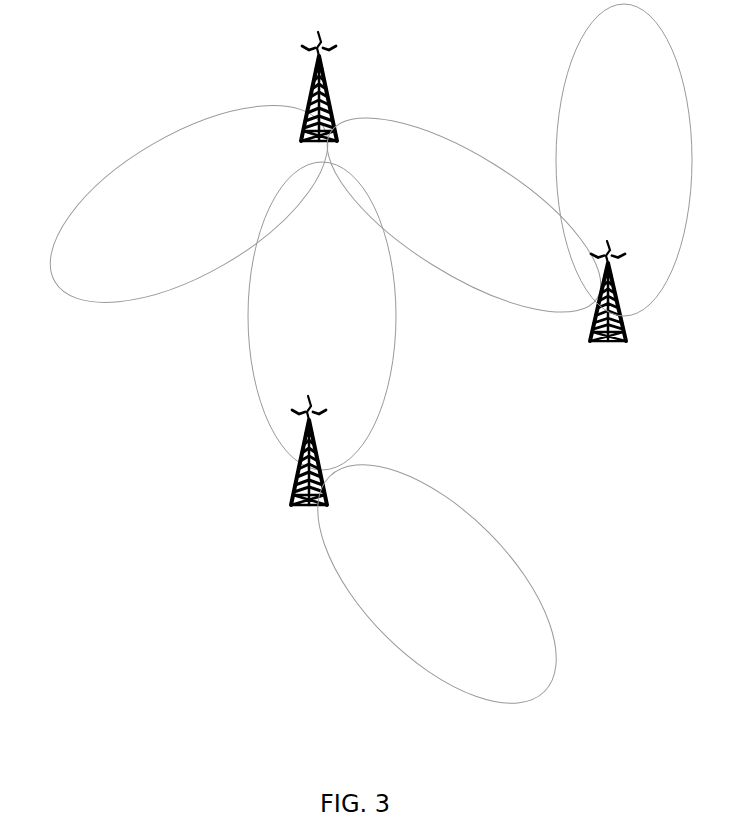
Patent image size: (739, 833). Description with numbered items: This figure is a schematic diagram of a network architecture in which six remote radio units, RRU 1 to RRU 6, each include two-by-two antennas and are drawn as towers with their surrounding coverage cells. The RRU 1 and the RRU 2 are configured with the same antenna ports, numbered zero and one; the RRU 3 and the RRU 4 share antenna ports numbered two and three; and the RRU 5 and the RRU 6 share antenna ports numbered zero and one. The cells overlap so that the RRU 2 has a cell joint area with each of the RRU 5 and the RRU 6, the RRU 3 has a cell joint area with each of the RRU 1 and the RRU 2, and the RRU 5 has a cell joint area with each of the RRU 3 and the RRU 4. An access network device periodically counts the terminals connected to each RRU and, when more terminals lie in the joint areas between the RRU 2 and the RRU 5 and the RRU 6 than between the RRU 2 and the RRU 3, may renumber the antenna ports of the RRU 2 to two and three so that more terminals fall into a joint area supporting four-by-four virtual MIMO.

The RRU 1 is at (189, 187).
The RRU 2 is at (464, 215).
The RRU 3 is at (322, 333).
The RRU 4 is at (437, 584).
The RRU 5 is at (574, 300).
The RRU 6 is at (624, 160).